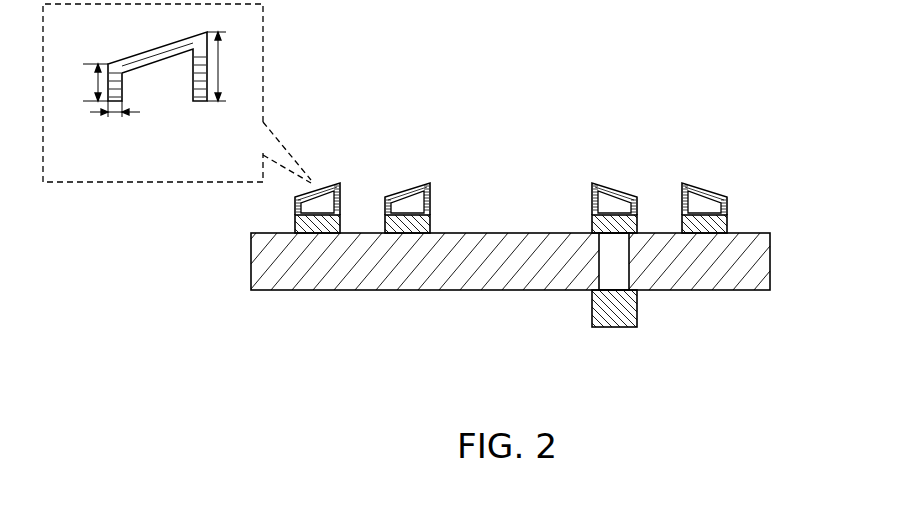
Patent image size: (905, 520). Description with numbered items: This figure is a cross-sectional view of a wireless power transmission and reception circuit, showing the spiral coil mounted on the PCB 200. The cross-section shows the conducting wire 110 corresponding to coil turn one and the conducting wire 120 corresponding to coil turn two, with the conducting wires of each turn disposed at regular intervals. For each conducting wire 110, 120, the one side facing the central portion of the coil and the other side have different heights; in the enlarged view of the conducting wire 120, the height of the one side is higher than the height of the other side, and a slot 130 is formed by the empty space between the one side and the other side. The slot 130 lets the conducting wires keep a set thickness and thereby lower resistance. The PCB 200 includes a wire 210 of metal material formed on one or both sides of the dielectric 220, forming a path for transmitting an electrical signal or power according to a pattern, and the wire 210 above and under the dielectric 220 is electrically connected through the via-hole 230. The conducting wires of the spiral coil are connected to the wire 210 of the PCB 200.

The conducting wire 110 is at (591, 184).
The conducting wire 120 is at (682, 183).
The slot 130 is at (158, 120).
The PCB 200 is at (251, 275).
The wire 210 is at (722, 227).
The dielectric 220 is at (758, 265).
The via-hole 230 is at (618, 262).